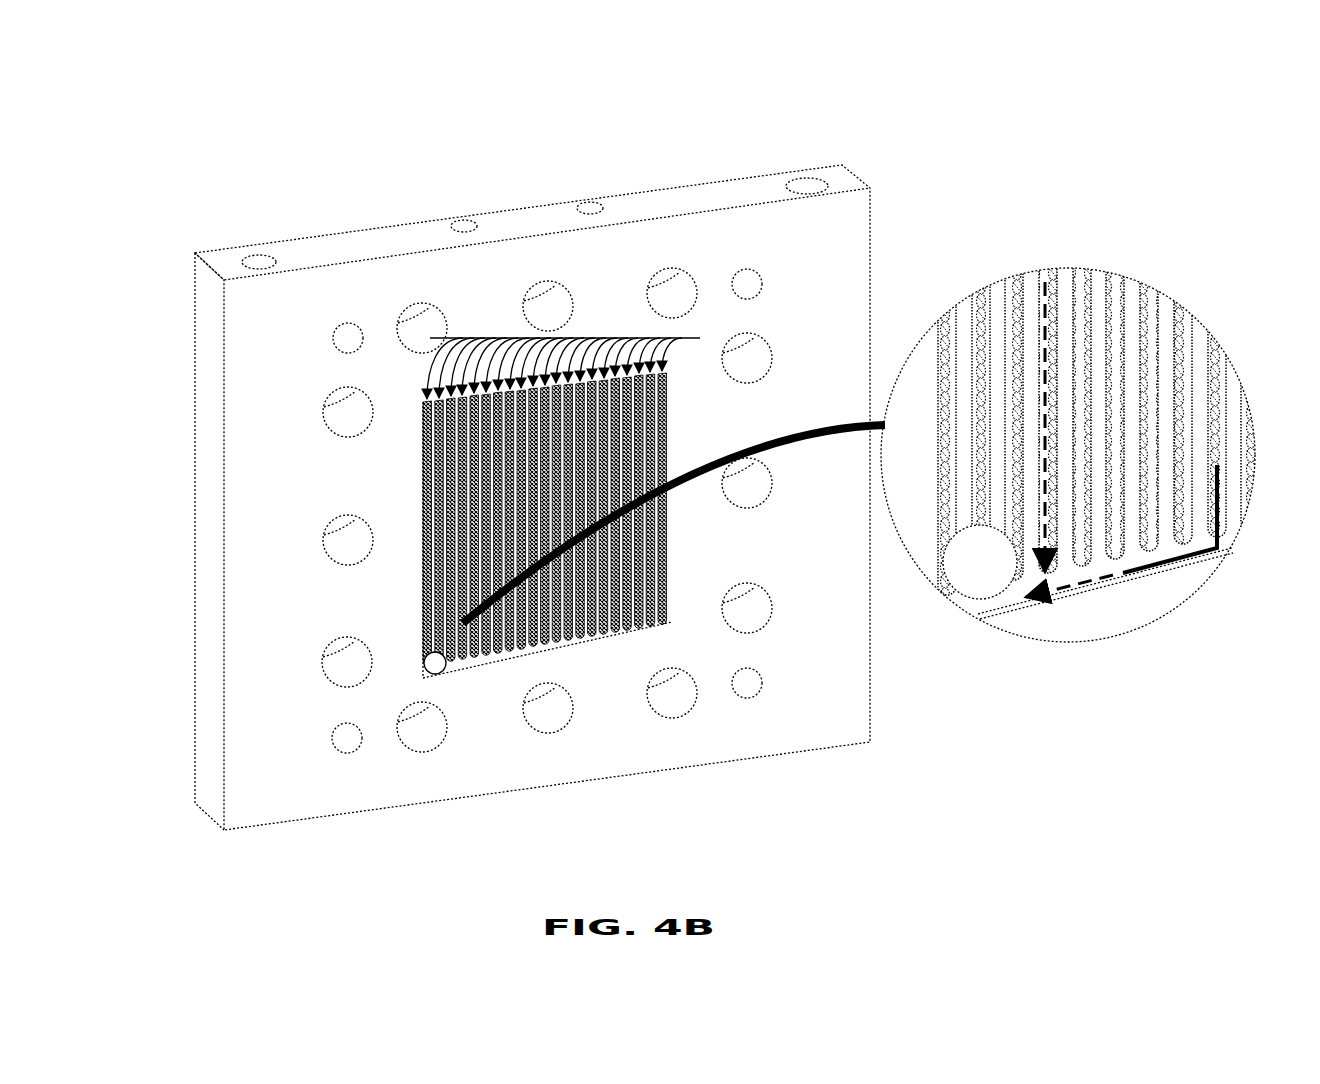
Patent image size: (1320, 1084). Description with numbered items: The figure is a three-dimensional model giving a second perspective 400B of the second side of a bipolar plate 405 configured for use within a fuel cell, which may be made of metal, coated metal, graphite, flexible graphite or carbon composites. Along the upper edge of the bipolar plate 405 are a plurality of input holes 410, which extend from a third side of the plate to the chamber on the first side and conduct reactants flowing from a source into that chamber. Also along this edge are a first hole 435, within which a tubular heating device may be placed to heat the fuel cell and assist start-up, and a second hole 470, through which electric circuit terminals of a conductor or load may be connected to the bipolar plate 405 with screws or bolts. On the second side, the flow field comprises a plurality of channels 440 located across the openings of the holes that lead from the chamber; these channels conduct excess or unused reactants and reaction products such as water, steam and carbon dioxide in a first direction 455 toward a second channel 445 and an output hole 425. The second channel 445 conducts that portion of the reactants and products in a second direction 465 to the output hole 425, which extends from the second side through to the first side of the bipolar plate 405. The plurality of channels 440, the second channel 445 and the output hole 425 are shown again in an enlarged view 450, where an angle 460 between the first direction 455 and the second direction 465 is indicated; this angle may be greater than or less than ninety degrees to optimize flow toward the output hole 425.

The second perspective 400B is at (211, 104).
The bipolar plate 405 is at (195, 338).
The plurality of input holes 410 is at (468, 214).
The output hole 425 is at (430, 653).
The first hole 435 is at (265, 253).
The plurality of channels 440 is at (1080, 222).
The second channel 445 is at (658, 620).
The enlarged view 450 is at (1017, 272).
The first direction 455 is at (1047, 283).
The angle 460 is at (1187, 549).
The second direction 465 is at (1105, 581).
The second hole 470 is at (820, 181).